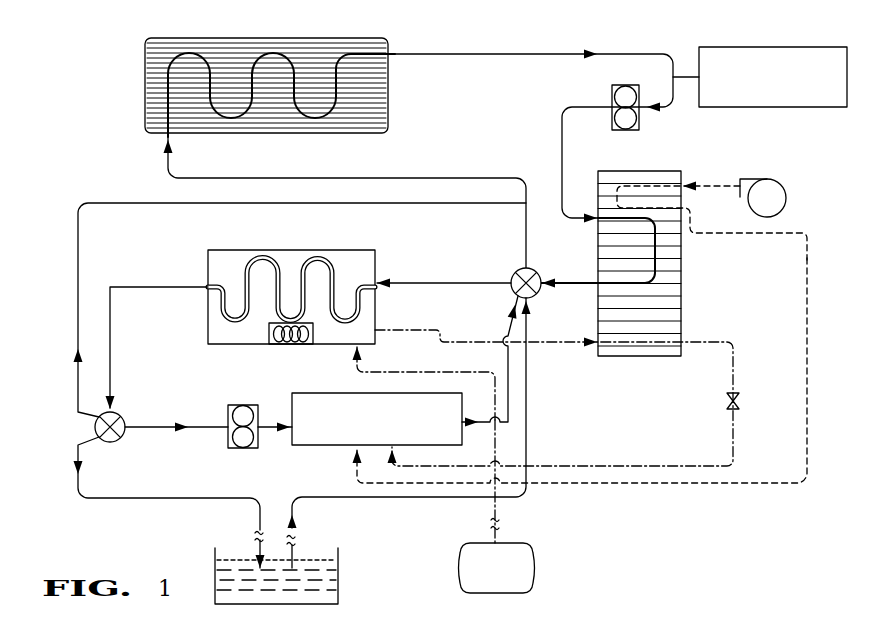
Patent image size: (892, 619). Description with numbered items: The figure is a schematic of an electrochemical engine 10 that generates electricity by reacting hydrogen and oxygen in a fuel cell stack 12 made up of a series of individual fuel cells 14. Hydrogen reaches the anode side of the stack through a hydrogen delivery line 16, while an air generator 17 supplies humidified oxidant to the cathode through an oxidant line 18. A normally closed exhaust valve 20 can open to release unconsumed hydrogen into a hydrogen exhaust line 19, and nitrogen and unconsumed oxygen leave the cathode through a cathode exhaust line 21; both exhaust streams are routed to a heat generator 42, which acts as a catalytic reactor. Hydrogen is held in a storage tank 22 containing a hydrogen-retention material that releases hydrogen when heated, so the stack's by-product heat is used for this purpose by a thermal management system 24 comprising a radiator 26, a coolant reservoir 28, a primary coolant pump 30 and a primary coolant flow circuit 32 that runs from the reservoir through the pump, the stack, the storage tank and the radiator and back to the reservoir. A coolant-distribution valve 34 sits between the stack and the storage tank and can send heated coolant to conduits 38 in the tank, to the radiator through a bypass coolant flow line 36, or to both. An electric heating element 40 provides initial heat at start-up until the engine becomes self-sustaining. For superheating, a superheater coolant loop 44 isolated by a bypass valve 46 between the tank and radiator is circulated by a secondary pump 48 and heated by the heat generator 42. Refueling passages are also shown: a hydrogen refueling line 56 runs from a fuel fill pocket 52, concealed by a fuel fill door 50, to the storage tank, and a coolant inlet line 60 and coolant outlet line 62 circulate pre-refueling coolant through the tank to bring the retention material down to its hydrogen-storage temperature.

The electrochemical engine 10 is at (78, 102).
The fuel cell stack 12 is at (686, 318).
The individual fuel cells 14 is at (676, 272).
The hydrogen delivery line 16 is at (466, 340).
The air generator 17 is at (786, 203).
The oxidant line 18 is at (700, 187).
The hydrogen exhaust line 19 is at (733, 452).
The exhaust valve 20 is at (741, 397).
The cathode exhaust line 21 is at (768, 236).
The storage tank 22 is at (234, 245).
The thermal management system 24 is at (392, 90).
The radiator 26 is at (145, 72).
The coolant reservoir 28 is at (762, 47).
The primary coolant pump 30 is at (639, 124).
The primary coolant flow circuit 32 is at (562, 151).
The coolant-distribution valve 34 is at (537, 271).
The bypass coolant flow line 36 is at (526, 236).
The conduits 38 is at (325, 262).
The electric heating element 40 is at (283, 346).
The heat generator 42 is at (337, 393).
The superheater coolant loop 44 is at (203, 424).
The bypass valve 46 is at (105, 405).
The secondary pump 48 is at (227, 442).
The fuel fill door 50 is at (533, 568).
The fuel fill pocket 52 is at (340, 583).
The hydrogen refueling line 56 is at (390, 372).
The coolant inlet line 60 is at (505, 496).
The coolant outlet line 62 is at (112, 500).